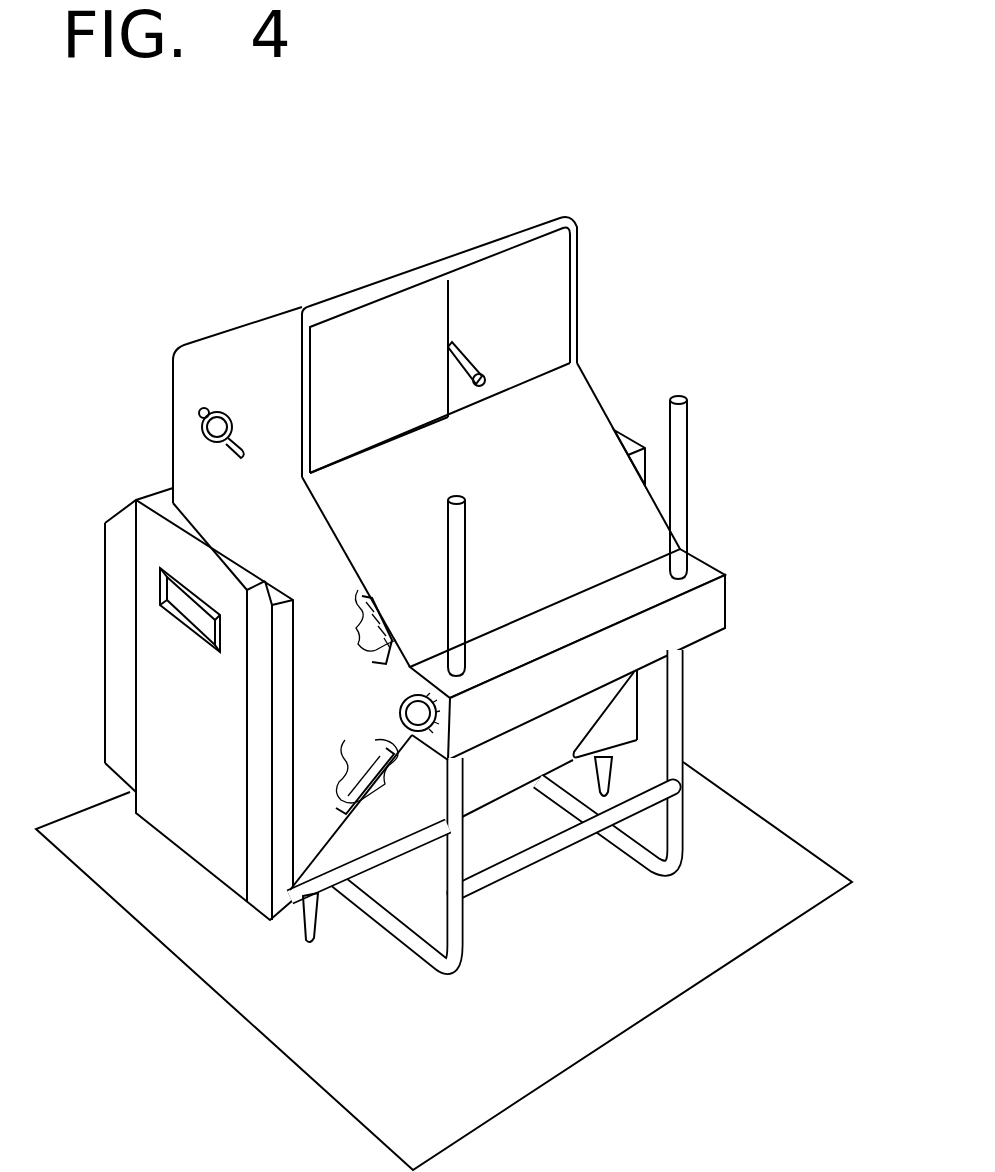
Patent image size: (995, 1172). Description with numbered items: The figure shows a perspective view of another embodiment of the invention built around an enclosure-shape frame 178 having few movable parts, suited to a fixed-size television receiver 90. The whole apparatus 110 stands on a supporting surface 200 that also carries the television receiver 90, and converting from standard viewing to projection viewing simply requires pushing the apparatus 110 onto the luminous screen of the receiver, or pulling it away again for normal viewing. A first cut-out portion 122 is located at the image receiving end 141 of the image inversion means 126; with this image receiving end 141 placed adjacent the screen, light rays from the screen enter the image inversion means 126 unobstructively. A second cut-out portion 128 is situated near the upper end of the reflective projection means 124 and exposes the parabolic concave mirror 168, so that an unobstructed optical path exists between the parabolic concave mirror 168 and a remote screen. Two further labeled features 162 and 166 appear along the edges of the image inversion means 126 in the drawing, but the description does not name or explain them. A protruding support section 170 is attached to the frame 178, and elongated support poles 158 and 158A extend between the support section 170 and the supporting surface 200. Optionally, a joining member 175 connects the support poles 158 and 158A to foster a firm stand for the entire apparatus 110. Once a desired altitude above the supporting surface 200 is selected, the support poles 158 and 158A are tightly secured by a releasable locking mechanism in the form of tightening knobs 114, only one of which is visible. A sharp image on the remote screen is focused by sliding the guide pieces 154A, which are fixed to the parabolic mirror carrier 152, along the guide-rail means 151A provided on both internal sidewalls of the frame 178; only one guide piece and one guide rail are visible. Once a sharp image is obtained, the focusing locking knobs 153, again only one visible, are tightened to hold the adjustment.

The television receiver 90 is at (175, 823).
The apparatus 110 is at (530, 808).
The tightening knob 114 is at (440, 723).
The first cut-out portion 122 is at (290, 762).
The reflective projection means 124 is at (396, 443).
The image inversion means 126 is at (491, 507).
The second cut-out portion 128 is at (557, 305).
The image receiving end 141 is at (290, 850).
The guide-rail means 151A is at (492, 364).
The parabolic mirror carrier 152 is at (448, 288).
The focusing locking knob 153 is at (225, 408).
The guide piece 154A is at (494, 352).
The support pole 158 is at (466, 573).
The support pole 158A is at (688, 485).
The hinge strip 162 is at (357, 742).
The seal strip 166 is at (382, 646).
The parabolic concave mirror 168 is at (393, 403).
The protruding support section 170 is at (711, 633).
The joining member 175 is at (547, 857).
The enclosure-shape frame 178 is at (172, 413).
The supporting surface 200 is at (595, 973).